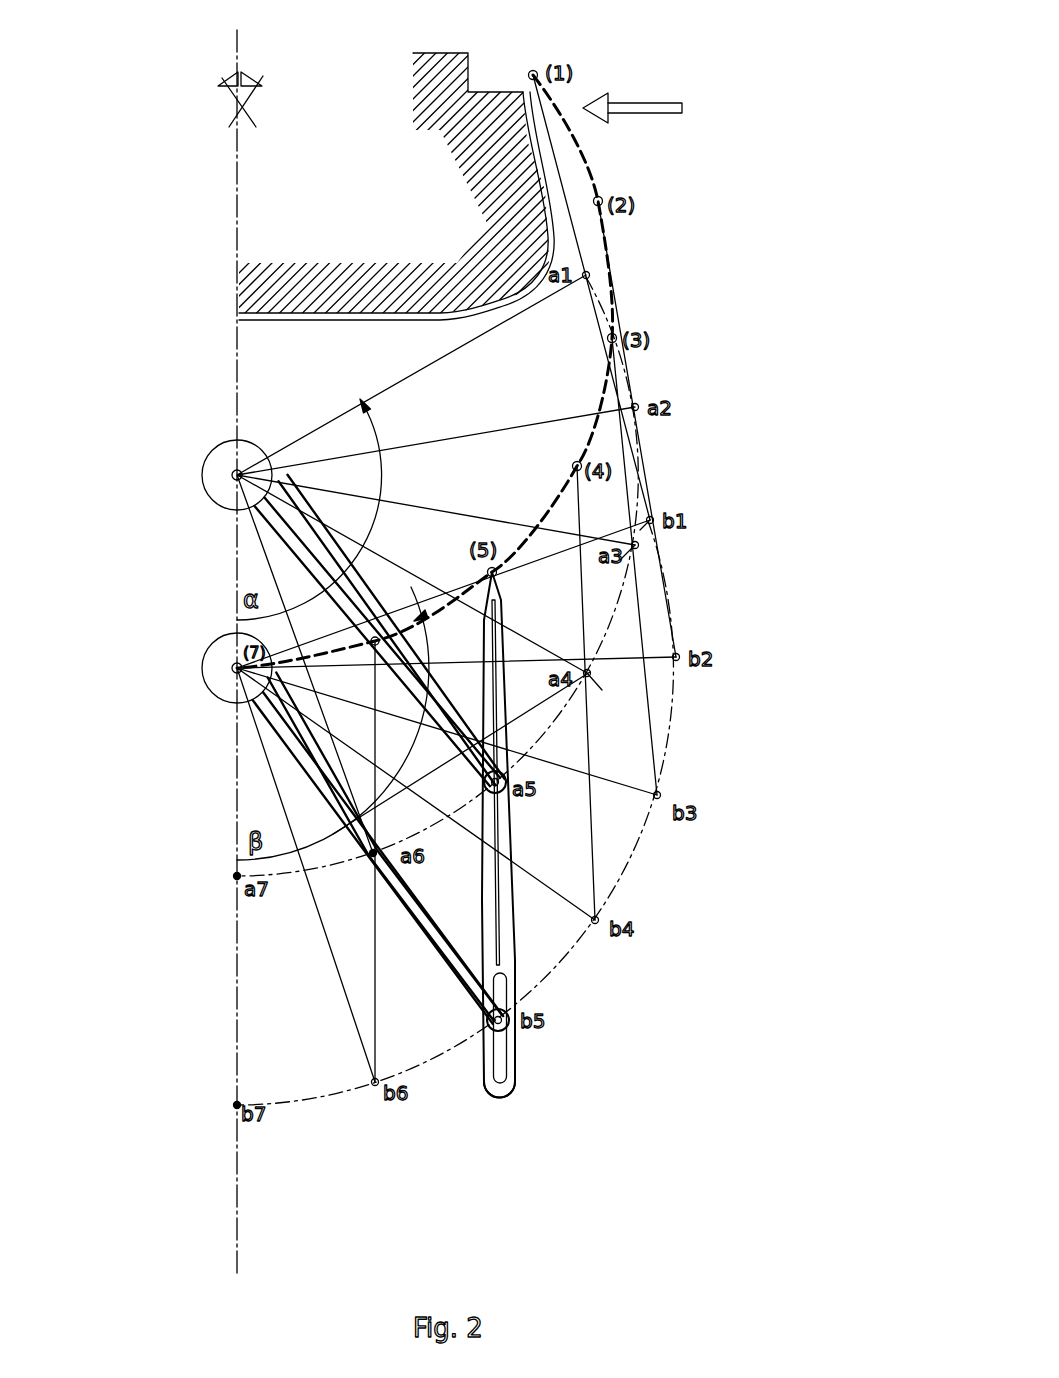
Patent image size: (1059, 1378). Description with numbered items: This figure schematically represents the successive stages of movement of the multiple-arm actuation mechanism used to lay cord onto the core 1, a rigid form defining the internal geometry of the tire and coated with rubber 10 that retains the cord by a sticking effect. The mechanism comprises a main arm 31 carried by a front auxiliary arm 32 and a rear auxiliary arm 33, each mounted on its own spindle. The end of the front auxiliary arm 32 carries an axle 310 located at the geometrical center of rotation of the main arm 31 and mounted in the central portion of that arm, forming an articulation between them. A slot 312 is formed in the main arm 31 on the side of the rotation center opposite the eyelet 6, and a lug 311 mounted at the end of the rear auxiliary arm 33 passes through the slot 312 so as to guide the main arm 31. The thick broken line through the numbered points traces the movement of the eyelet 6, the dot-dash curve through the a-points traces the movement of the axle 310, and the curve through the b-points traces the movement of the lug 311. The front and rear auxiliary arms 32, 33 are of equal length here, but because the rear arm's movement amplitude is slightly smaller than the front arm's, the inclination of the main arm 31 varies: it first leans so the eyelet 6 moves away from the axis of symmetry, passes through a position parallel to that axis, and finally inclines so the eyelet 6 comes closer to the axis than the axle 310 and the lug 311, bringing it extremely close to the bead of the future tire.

The core 1 is at (433, 63).
The rubber 10 is at (524, 92).
The eyelet 6 is at (500, 568).
The main arm 31 is at (596, 875).
The front auxiliary arm 32 is at (248, 548).
The rear auxiliary arm 33 is at (270, 737).
The axle 310 is at (513, 777).
The lug 311 is at (520, 1030).
The slot 312 is at (485, 1077).